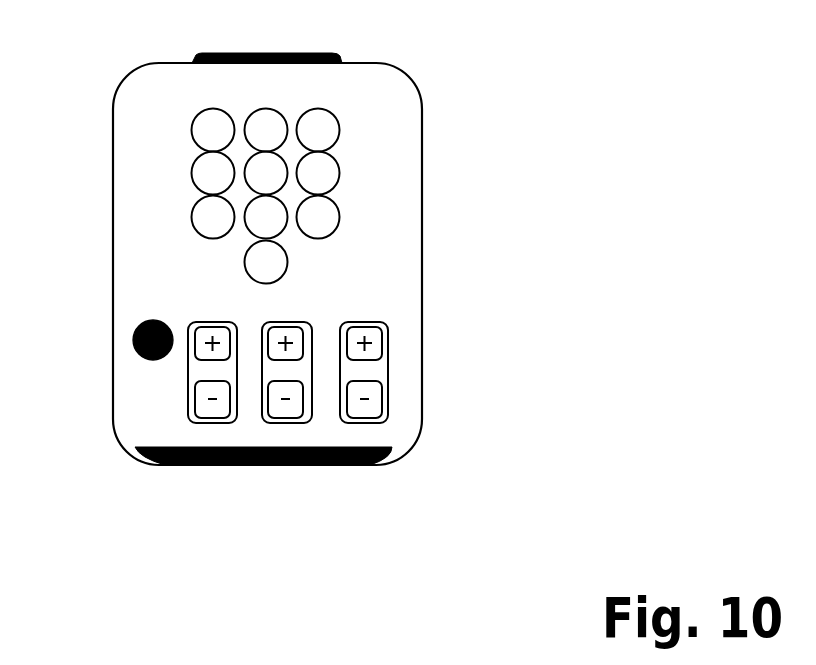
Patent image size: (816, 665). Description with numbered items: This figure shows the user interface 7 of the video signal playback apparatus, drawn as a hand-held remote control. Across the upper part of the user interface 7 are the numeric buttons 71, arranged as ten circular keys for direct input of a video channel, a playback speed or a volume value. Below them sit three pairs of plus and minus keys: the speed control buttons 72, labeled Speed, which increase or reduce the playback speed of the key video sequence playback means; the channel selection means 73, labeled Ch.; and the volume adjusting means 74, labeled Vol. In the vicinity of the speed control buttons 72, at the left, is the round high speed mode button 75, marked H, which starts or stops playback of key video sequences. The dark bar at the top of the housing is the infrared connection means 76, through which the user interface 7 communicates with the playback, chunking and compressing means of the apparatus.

The user interface 7 is at (422, 352).
The numeric buttons 71 is at (338, 143).
The speed control buttons 72 is at (211, 418).
The channel selection means 73 is at (290, 418).
The volume adjusting means 74 is at (366, 418).
The high speed mode button 75 is at (133, 342).
The infrared connection means 76 is at (342, 54).